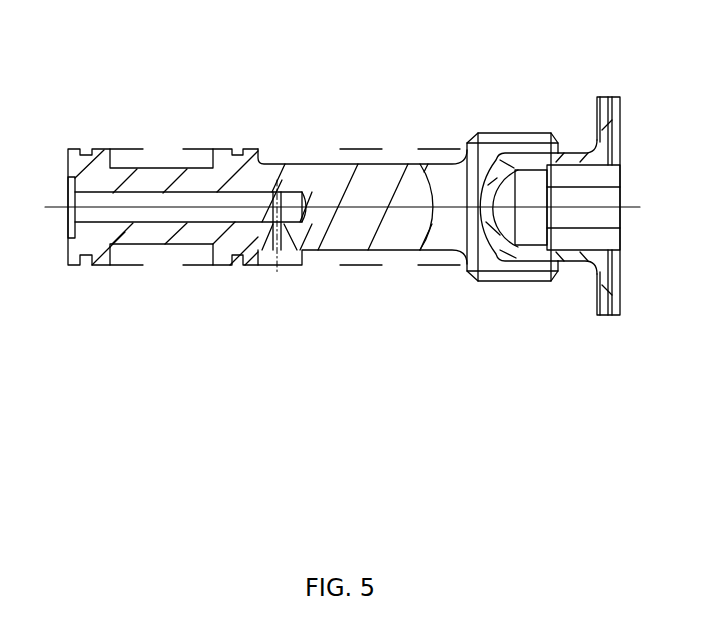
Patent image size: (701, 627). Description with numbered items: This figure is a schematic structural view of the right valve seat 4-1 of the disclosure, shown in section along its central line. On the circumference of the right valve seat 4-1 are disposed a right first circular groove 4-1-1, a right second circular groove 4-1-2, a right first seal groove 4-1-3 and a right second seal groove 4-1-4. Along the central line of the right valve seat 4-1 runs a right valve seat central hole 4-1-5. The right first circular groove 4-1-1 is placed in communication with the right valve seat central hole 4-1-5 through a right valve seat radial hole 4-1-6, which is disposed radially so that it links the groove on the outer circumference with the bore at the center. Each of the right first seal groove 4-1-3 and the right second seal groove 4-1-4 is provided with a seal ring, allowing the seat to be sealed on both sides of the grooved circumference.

The right valve seat 4-1 is at (445, 215).
The right first circular groove 4-1-1 is at (307, 157).
The right second circular groove 4-1-2 is at (135, 252).
The right first seal groove 4-1-3 is at (85, 263).
The right second seal groove 4-1-4 is at (238, 265).
The right valve seat central hole 4-1-5 is at (228, 205).
The right valve seat radial hole 4-1-6 is at (280, 228).